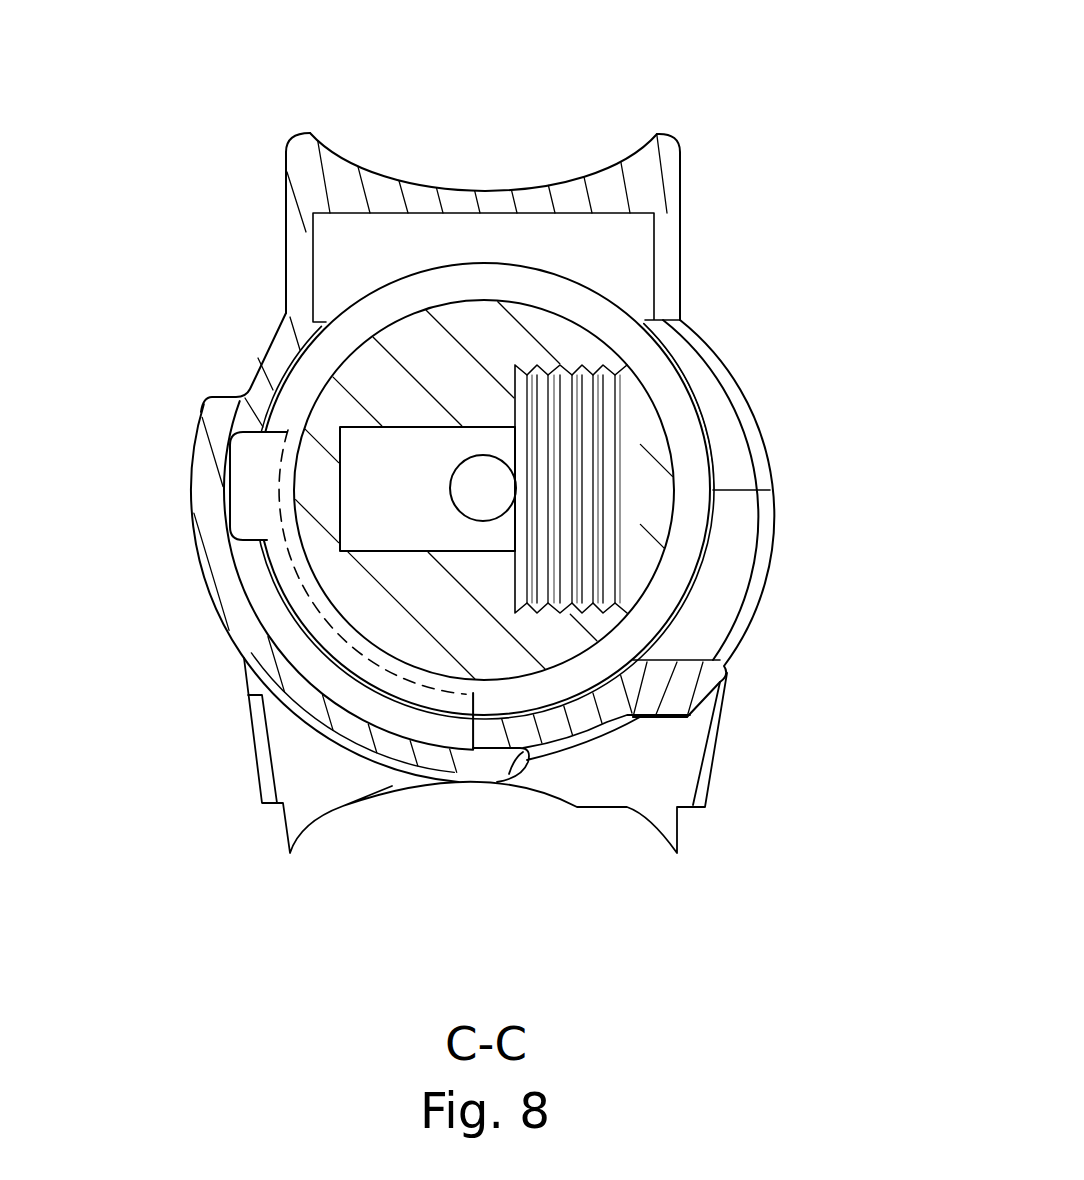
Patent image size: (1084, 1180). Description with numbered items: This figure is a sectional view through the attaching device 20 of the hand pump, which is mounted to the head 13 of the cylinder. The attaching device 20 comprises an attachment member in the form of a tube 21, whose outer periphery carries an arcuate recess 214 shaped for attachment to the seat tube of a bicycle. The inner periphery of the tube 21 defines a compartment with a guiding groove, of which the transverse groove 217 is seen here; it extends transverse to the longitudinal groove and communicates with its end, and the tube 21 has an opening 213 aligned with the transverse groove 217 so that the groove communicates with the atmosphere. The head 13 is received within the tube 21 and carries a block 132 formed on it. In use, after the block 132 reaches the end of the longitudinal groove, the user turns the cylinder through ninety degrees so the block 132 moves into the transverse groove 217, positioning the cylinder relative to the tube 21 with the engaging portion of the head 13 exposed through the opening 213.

The attaching device 20 is at (713, 300).
The tube 21 is at (255, 395).
The head 13 is at (622, 447).
The block 132 is at (247, 488).
The opening 213 is at (733, 585).
The arcuate recess 214 is at (503, 177).
The transverse groove 217 is at (290, 617).